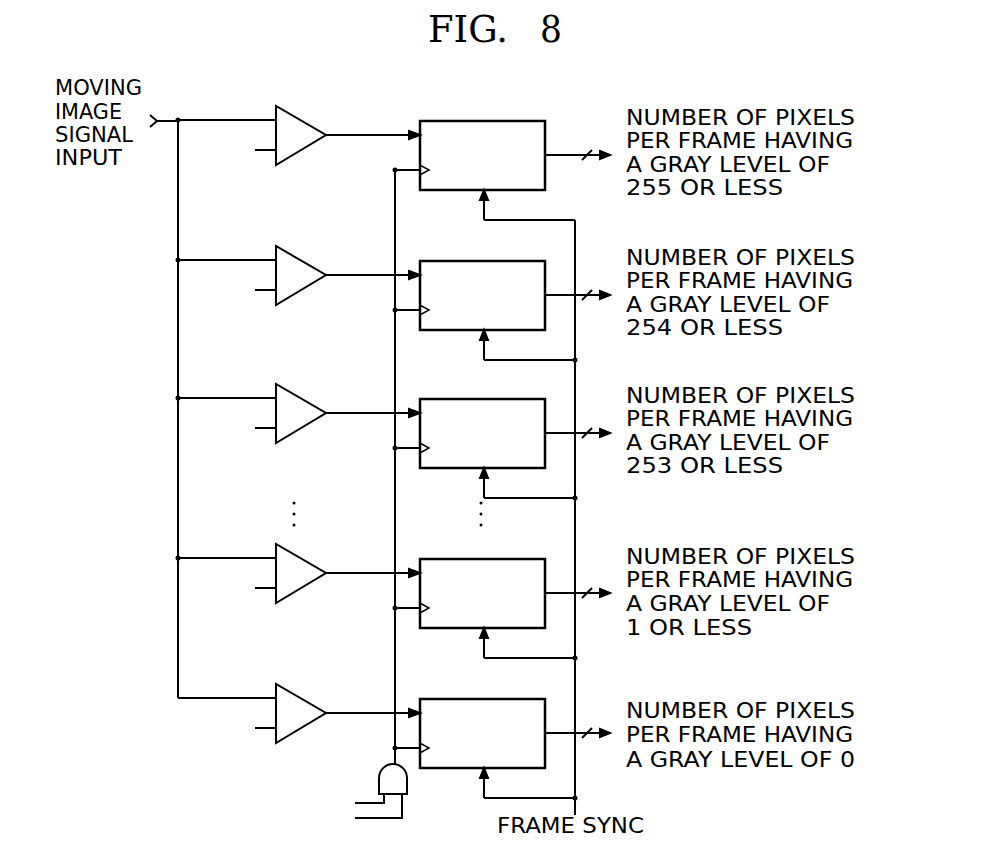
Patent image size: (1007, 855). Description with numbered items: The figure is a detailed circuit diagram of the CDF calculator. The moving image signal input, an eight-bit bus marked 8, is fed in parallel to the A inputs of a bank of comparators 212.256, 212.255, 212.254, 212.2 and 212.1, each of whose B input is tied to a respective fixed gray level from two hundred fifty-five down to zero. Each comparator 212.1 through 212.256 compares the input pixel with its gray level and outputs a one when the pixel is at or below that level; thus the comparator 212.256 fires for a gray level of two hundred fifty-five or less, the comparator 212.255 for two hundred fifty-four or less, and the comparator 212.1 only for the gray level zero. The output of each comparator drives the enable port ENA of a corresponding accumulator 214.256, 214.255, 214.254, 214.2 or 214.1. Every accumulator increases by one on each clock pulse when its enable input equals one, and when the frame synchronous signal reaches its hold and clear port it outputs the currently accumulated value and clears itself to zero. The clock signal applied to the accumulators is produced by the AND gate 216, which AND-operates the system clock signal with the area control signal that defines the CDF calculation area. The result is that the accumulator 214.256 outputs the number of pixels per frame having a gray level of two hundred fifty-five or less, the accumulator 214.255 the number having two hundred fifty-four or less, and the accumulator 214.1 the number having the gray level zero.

The moving image signal input (8-bit bus) 8 is at (158, 129).
The comparator 212.256 is at (297, 118).
The comparator 212.255 is at (297, 258).
The comparator 212.254 is at (297, 396).
The comparator 212.2 is at (298, 590).
The comparator 212.1 is at (293, 695).
The accumulator 214.256 is at (440, 121).
The accumulator 214.255 is at (440, 261).
The accumulator 214.254 is at (440, 399).
The accumulator 214.2 is at (440, 561).
The accumulator 214.1 is at (440, 701).
The AND gate 216 is at (409, 788).